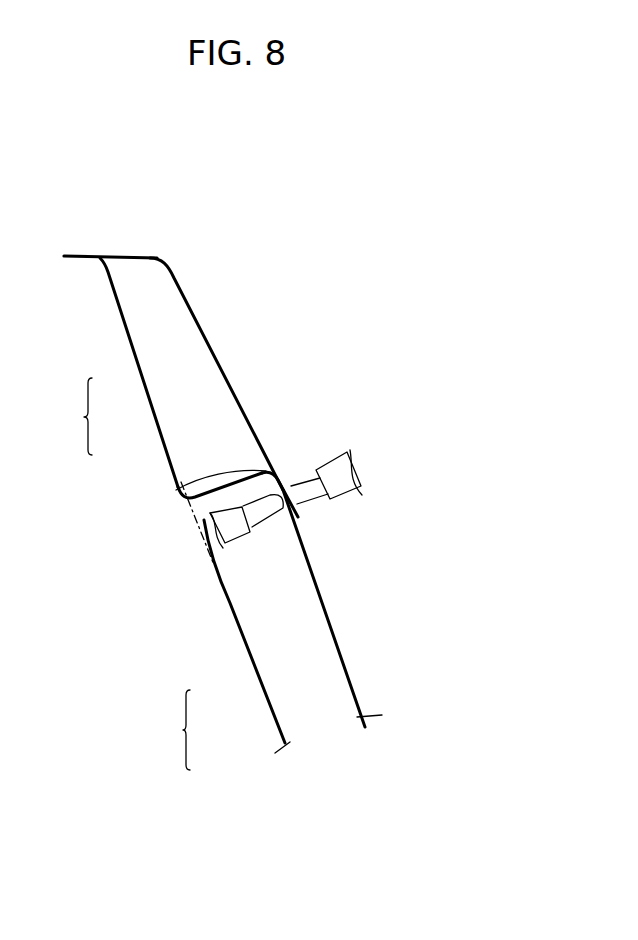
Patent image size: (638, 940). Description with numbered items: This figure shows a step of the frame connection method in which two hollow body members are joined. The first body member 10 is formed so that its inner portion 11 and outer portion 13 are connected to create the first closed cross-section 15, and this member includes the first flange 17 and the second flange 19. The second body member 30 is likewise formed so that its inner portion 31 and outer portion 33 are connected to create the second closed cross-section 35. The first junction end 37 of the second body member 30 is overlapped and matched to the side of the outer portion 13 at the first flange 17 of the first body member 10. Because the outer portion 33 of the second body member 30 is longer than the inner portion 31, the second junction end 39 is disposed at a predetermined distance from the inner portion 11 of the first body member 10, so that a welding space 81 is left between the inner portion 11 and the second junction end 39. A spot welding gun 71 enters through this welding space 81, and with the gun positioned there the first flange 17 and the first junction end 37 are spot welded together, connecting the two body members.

The first body member 10 is at (187, 360).
The second flange 19 is at (70, 253).
The inner portion 11 is at (145, 383).
The outer portion 13 is at (238, 402).
The first closed cross-section 15 is at (77, 416).
The first junction end 37 is at (187, 500).
The first flange 17 is at (276, 486).
The second body member 30 is at (276, 626).
The inner portion 31 is at (262, 688).
The outer portion 33 is at (363, 717).
The second closed cross-section 35 is at (177, 730).
The second junction end 39 is at (217, 582).
The welding space 81 is at (206, 541).
The spot welding gun 71 is at (303, 497).